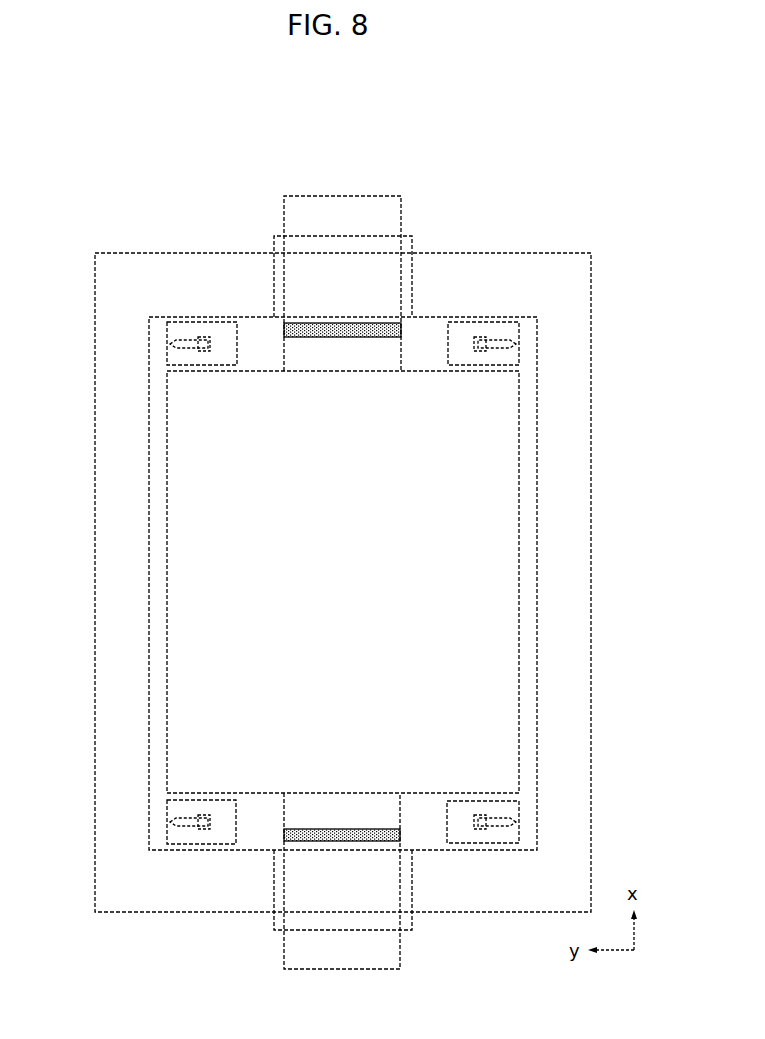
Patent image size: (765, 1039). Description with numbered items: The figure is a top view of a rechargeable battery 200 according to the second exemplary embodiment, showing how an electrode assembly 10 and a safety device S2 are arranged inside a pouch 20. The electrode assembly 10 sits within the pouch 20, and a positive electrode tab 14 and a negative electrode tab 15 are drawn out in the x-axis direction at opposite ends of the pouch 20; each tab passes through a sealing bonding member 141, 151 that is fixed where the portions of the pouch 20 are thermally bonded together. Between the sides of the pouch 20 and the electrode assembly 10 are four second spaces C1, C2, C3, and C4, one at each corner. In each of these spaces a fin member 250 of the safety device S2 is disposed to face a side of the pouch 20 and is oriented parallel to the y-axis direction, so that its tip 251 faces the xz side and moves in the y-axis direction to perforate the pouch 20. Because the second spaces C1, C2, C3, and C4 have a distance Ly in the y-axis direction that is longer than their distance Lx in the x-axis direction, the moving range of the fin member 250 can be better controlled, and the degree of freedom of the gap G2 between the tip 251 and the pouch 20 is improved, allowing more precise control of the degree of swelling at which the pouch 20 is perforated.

The rechargeable battery 200 is at (360, 98).
The electrode assembly 10 is at (358, 587).
The positive electrode tab 14 is at (313, 958).
The sealing bonding member 141 is at (370, 930).
The negative electrode tab 15 is at (312, 205).
The sealing bonding member 151 is at (372, 236).
The pouch 20 is at (562, 252).
The fin member 250 is at (190, 818).
The tip 251 is at (167, 840).
The safety device S2 is at (166, 808).
The second space C1 is at (252, 828).
The second space C2 is at (424, 828).
The second space C3 is at (255, 339).
The second space C4 is at (425, 338).
The gap G2 is at (167, 850).
The distance in the x-axis direction Lx is at (246, 322).
The distance in the y-axis direction Ly is at (283, 371).